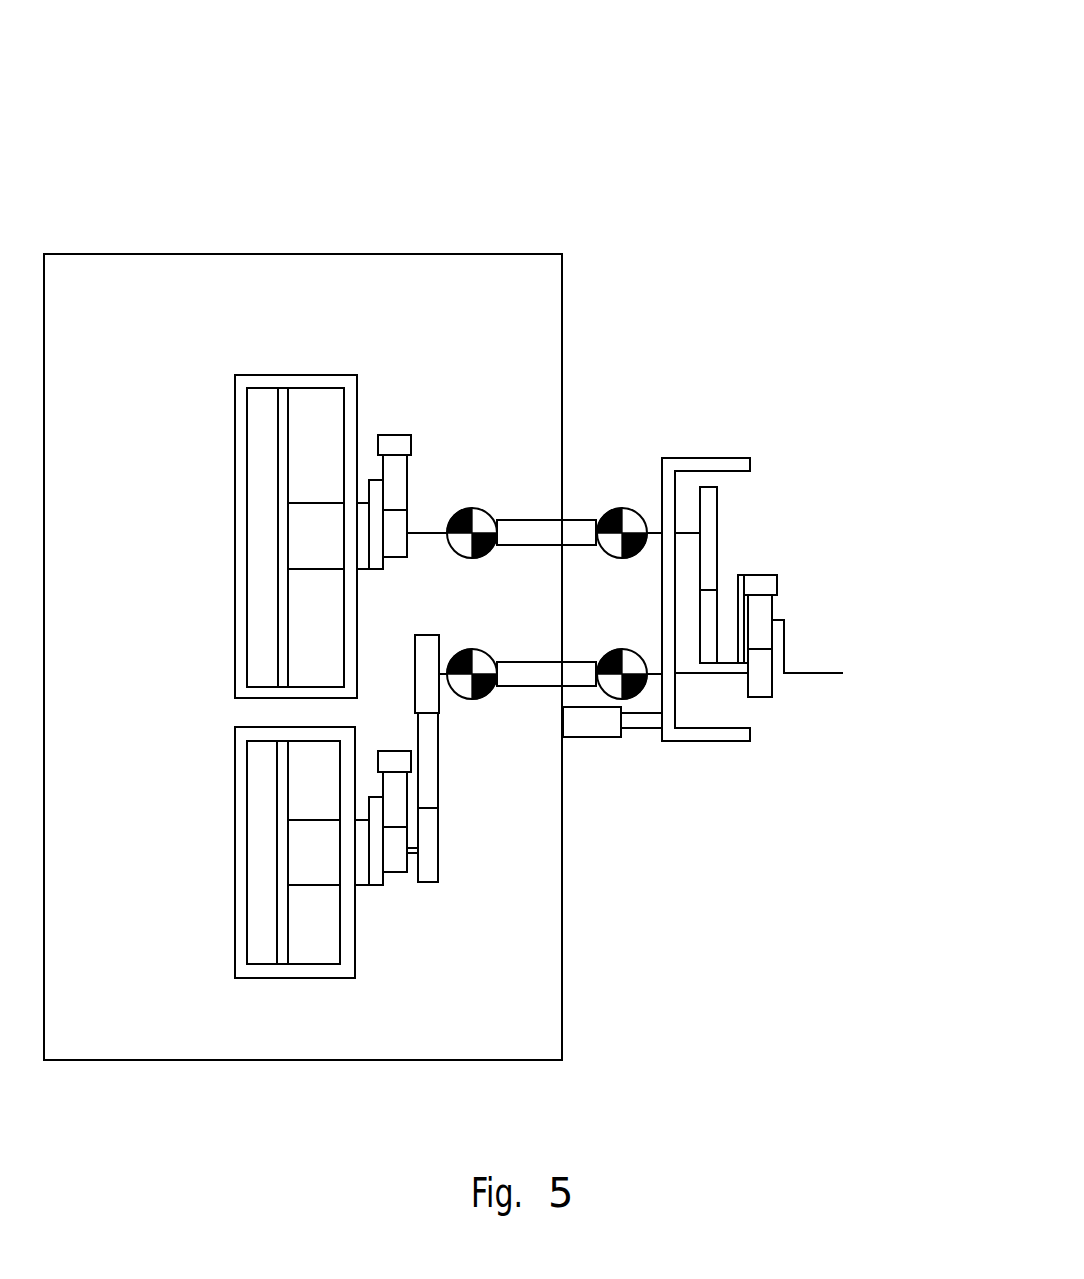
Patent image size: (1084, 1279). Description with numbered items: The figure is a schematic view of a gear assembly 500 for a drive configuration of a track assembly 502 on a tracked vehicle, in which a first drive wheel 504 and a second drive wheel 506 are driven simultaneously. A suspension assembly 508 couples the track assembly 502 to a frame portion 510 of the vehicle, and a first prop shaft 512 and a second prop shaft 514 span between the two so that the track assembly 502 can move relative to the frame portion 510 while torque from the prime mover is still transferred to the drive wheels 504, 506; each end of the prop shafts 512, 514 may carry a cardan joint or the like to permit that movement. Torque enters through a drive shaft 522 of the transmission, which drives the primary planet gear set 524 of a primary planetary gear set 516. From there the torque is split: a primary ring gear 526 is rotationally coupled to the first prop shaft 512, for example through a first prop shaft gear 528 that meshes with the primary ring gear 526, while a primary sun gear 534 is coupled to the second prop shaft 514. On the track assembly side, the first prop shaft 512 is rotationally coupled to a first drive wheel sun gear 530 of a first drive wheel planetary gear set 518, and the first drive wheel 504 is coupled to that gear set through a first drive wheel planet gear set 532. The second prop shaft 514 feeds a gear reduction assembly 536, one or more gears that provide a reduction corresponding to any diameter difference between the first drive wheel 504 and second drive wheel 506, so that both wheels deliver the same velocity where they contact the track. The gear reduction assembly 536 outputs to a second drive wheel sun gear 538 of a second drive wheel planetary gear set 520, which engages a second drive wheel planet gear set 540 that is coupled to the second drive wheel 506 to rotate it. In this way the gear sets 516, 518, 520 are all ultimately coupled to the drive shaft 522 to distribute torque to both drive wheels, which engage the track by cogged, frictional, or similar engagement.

The gear assembly 500 is at (733, 117).
The track assembly 502 is at (166, 243).
The first drive wheel 504 is at (233, 493).
The second drive wheel 506 is at (233, 855).
The suspension assembly 508 is at (592, 729).
The frame portion 510 is at (705, 458).
The first prop shaft 512 is at (579, 522).
The second prop shaft 514 is at (530, 662).
The primary planetary gear set 516 is at (870, 514).
The first drive wheel planetary gear set 518 is at (447, 481).
The second drive wheel planetary gear set 520 is at (414, 898).
The drive shaft 522 is at (810, 675).
The primary planet gear set 524 is at (773, 610).
The primary ring gear 526 is at (760, 582).
The first prop shaft gear 528 is at (718, 510).
The first drive wheel sun gear 530 is at (397, 550).
The first drive wheel planet gear set 532 is at (397, 475).
The primary sun gear 534 is at (760, 698).
The gear reduction assembly 536 is at (464, 779).
The second drive wheel sun gear 538 is at (393, 865).
The second drive wheel planet gear set 540 is at (398, 792).